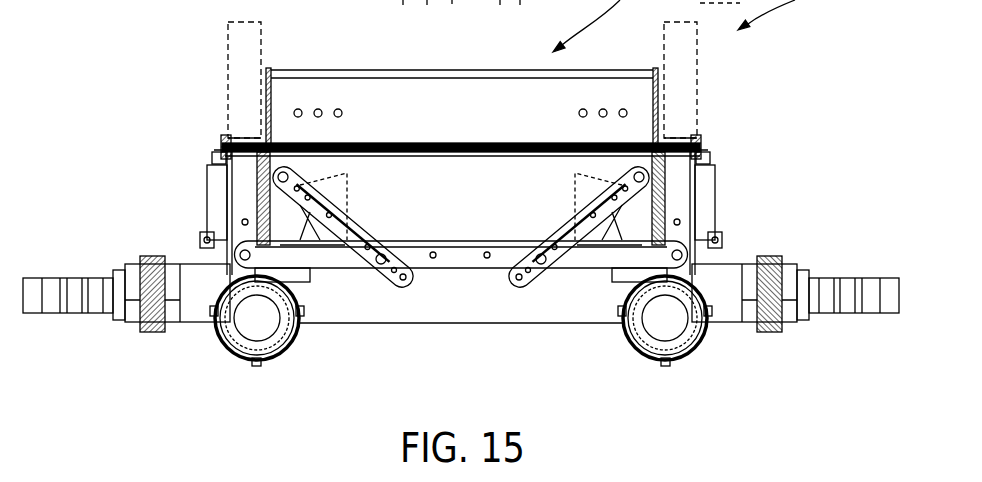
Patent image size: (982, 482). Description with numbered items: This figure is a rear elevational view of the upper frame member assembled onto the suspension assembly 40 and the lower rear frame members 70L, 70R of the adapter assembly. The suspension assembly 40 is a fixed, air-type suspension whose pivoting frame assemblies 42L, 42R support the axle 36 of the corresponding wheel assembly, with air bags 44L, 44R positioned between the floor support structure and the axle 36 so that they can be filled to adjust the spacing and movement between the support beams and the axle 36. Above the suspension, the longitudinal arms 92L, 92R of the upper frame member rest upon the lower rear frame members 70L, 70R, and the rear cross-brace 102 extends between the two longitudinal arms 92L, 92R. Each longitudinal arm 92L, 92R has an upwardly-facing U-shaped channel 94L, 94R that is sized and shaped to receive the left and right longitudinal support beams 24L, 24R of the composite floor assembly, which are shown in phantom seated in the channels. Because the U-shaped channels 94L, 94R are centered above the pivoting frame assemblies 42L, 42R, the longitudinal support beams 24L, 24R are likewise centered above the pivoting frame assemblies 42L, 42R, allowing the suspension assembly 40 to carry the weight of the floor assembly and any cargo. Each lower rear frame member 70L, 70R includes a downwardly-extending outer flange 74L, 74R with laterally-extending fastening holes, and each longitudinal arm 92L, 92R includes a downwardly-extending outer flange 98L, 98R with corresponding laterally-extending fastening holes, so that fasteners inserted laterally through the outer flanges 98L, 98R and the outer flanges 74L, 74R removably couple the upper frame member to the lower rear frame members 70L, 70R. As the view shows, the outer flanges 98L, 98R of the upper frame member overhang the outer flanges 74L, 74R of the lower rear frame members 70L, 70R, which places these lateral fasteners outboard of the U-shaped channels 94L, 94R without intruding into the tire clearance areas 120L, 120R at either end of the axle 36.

The rear cross-brace 102 is at (368, 78).
The left longitudinal support beam 24L is at (263, 50).
The right longitudinal support beam 24R is at (664, 55).
The U-shaped channel 94L is at (213, 108).
The U-shaped channel 94R is at (700, 130).
The longitudinal arm 92L is at (222, 138).
The longitudinal arm 92R is at (706, 147).
The outer flange 98L is at (222, 160).
The outer flange 98R is at (708, 166).
The air bag 44L is at (210, 180).
The air bag 44R is at (718, 196).
The pivoting frame assembly 42L is at (230, 202).
The pivoting frame assembly 42R is at (700, 205).
The outer flange 74L is at (222, 208).
The outer flange 74R is at (700, 208).
The lower rear frame member 70L is at (360, 165).
The lower rear frame member 70R is at (562, 165).
The axle 36 is at (457, 313).
The tire clearance area 120L is at (200, 268).
The tire clearance area 120R is at (722, 268).
The suspension assembly 40 is at (230, 378).